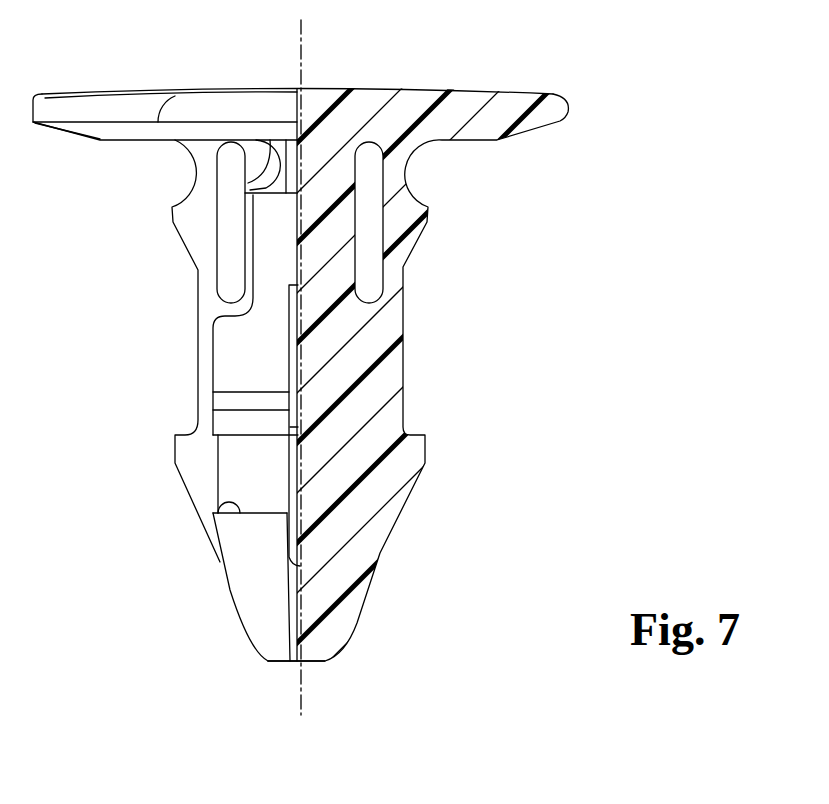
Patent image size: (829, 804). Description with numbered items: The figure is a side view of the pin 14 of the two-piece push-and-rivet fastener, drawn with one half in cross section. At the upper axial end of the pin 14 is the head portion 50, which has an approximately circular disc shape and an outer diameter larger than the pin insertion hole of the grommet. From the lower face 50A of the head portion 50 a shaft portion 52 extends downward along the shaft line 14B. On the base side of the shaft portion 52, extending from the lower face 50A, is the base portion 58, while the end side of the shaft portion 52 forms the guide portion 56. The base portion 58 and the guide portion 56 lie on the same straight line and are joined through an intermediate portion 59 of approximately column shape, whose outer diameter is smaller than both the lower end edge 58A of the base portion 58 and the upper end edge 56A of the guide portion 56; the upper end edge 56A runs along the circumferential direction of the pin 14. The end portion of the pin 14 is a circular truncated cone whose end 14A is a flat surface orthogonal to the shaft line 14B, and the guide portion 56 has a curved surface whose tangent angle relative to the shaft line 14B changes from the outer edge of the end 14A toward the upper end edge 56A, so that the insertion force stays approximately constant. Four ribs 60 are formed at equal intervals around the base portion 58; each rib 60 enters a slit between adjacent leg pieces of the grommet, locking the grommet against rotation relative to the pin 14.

The pin 14 is at (487, 82).
The end 14A is at (320, 661).
The shaft line 14B is at (303, 58).
The head portion 50 is at (143, 84).
The lower face 50A is at (121, 143).
The shaft portion 52 is at (172, 378).
The guide portion 56 is at (230, 590).
The upper end edge 56A is at (223, 501).
The base portion 58 is at (273, 230).
The lower end edge 58A is at (227, 417).
The intermediate portion 59 is at (257, 468).
The rib 60 is at (284, 333).